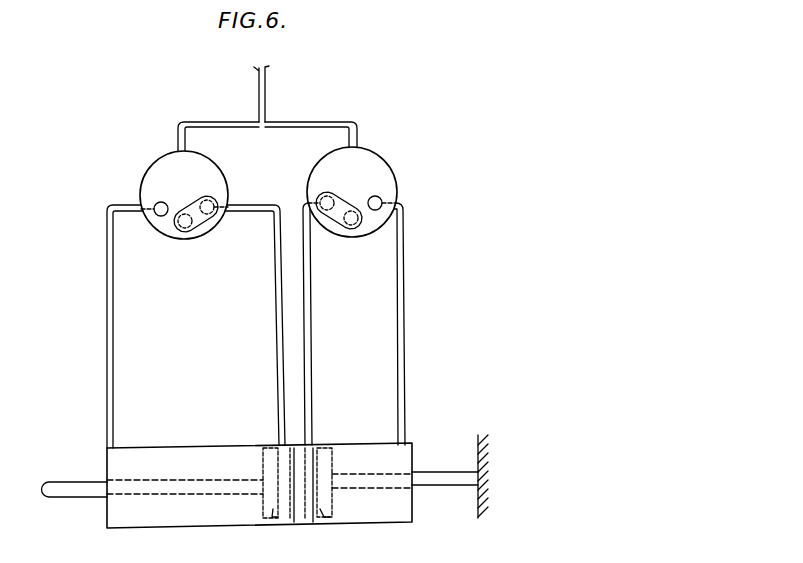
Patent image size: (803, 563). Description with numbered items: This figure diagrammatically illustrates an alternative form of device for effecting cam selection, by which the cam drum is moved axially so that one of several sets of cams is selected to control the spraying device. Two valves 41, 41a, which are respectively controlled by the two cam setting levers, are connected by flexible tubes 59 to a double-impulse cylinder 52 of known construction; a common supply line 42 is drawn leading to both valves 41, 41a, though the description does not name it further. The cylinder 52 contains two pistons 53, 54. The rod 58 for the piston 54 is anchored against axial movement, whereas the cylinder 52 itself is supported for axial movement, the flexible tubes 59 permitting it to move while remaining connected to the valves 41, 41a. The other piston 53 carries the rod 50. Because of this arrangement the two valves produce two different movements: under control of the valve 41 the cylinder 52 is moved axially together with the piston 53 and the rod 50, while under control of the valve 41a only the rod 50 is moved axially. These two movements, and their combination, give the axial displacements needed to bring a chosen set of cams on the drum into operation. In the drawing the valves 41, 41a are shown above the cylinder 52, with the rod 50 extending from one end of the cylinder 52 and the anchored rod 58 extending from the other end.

The valve 41 is at (365, 173).
The valve 41a is at (160, 180).
The supply pipe 42 is at (267, 93).
The flexible tubes 59 is at (113, 383).
The double-impulse cylinder 52 is at (416, 451).
The piston 53 is at (271, 521).
The piston 54 is at (325, 521).
The rod 50 is at (95, 487).
The rod 58 is at (422, 478).